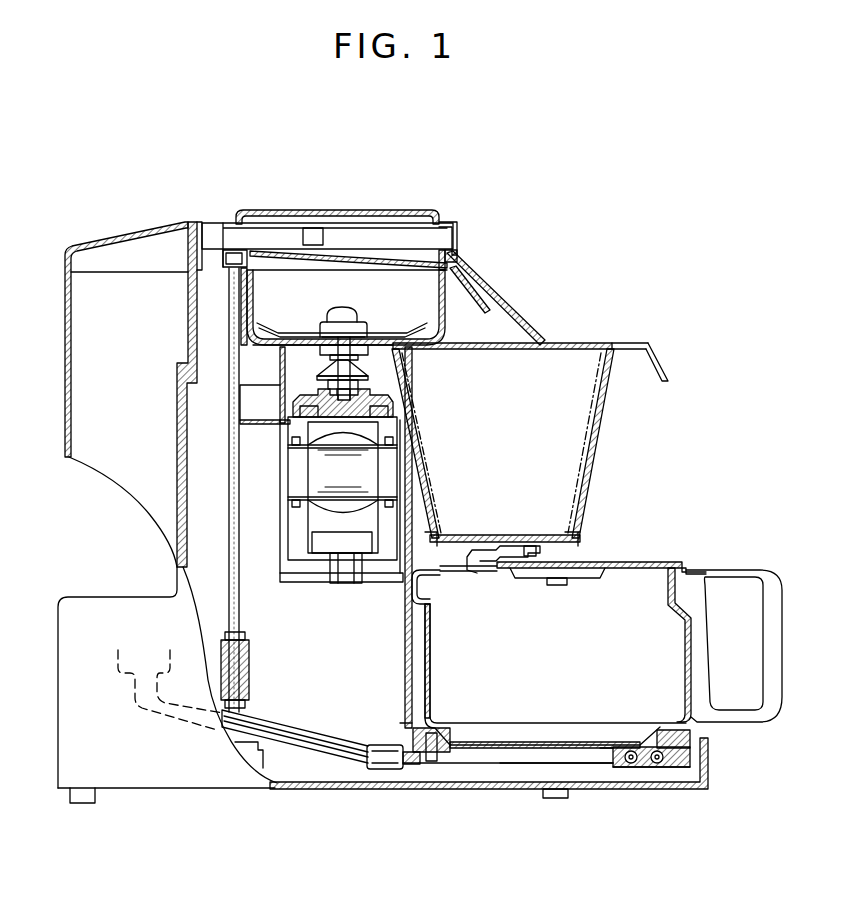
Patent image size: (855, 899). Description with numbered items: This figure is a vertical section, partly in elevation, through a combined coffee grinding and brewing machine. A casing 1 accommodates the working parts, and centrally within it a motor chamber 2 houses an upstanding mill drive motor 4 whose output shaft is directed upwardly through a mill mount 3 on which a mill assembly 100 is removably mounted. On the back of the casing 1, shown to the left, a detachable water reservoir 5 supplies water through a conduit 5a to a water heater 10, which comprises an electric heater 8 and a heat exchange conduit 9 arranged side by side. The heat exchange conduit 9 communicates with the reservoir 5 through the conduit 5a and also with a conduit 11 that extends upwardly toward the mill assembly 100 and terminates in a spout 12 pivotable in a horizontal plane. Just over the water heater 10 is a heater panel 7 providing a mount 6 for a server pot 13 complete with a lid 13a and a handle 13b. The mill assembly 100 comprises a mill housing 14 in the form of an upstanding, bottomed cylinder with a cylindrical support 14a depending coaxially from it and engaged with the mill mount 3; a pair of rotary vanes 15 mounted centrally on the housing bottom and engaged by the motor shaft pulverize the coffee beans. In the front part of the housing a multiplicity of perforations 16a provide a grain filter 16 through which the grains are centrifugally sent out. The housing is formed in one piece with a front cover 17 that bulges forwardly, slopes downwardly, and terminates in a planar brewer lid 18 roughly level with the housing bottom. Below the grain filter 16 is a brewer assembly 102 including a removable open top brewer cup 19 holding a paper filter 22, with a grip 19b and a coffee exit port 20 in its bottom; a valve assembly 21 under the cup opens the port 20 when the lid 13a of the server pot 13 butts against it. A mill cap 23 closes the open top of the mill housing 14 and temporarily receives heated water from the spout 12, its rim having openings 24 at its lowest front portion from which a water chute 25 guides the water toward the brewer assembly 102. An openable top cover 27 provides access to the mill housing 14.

The casing 1 is at (385, 794).
The motor chamber 2 is at (347, 645).
The mill mount 3 is at (295, 417).
The mill drive motor 4 is at (323, 507).
The water reservoir 5 is at (66, 400).
The conduit 5a is at (288, 728).
The mount 6 is at (700, 732).
The heater panel 7 is at (596, 752).
The electric heater 8 is at (660, 765).
The heat exchange conduit 9 is at (631, 765).
The water heater 10 is at (645, 771).
The conduit 11 is at (227, 470).
The spout 12 is at (266, 237).
The server pot 13 is at (694, 645).
The lid 13a is at (657, 562).
The handle 13b is at (766, 590).
The mill housing 14 is at (243, 293).
The cylindrical support 14a is at (280, 385).
The rotary vanes 15 is at (307, 333).
The grain filter 16 is at (450, 313).
The perforations 16a is at (440, 287).
The front cover 17 is at (528, 326).
The brewer lid 18 is at (594, 343).
The brewer cup 19 is at (598, 432).
The grip 19b is at (665, 378).
The coffee exit port 20 is at (527, 535).
The valve assembly 21 is at (552, 552).
The paper filter 22 is at (573, 476).
The mill cap 23 is at (400, 262).
The openings 24 is at (458, 262).
The water chute 25 is at (475, 294).
The top cover 27 is at (355, 210).
The mill assembly 100 is at (262, 350).
The brewer assembly 102 is at (612, 398).